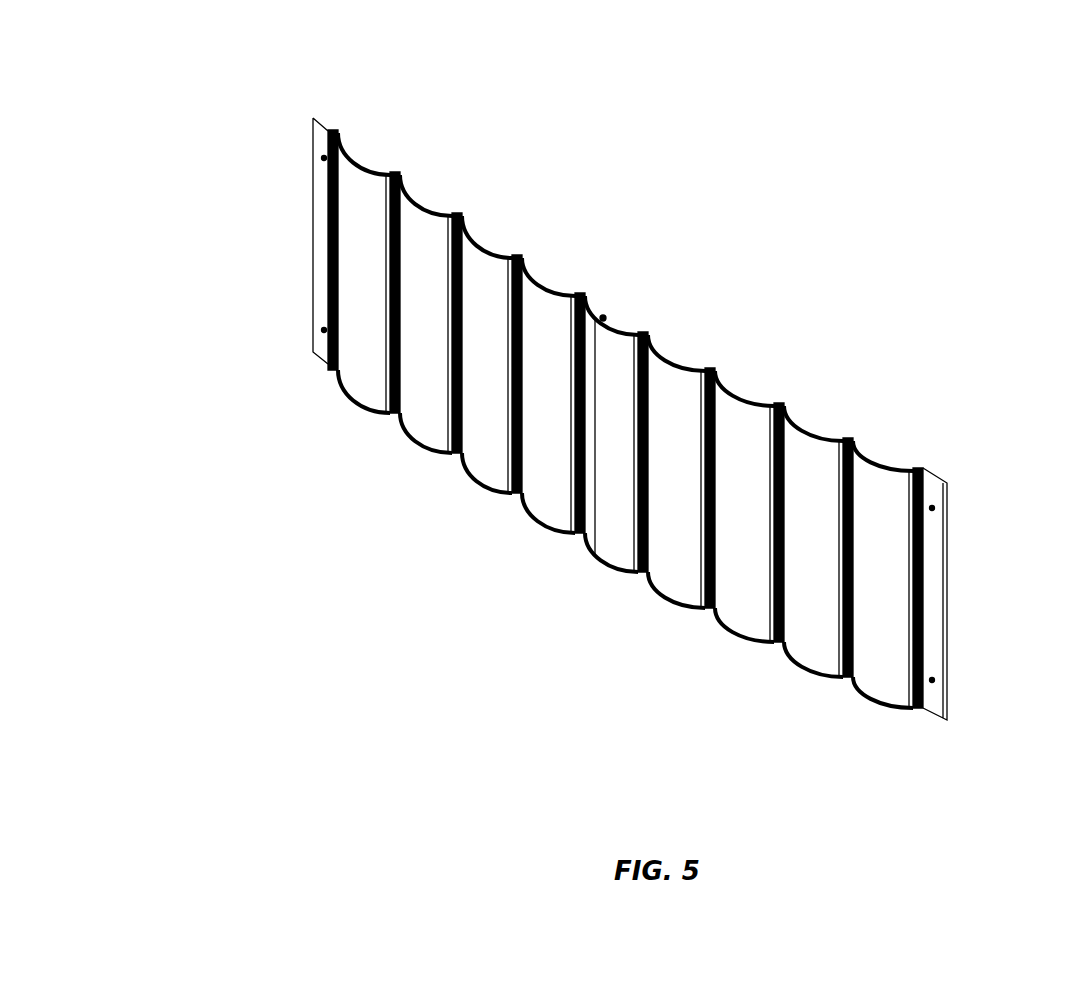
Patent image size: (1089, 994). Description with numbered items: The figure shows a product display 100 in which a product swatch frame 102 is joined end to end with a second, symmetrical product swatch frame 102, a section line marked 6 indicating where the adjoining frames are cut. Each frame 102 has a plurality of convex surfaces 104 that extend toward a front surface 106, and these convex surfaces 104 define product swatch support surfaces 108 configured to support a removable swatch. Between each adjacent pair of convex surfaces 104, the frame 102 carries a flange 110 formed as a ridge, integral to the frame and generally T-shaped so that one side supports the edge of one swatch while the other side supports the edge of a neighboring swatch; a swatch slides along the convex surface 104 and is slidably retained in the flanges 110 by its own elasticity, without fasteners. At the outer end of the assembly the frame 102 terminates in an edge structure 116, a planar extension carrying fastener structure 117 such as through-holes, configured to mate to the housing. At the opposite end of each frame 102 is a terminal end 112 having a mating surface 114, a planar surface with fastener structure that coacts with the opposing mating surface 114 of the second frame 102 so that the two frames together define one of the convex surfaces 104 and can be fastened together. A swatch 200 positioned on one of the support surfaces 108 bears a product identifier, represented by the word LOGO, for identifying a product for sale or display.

The product display 100 is at (463, 34).
The product swatch frame 102 is at (553, 98).
The convex surfaces 104 is at (543, 447).
The front surface 106 is at (342, 252).
The product swatch support surface 108 is at (342, 317).
The flange 110 is at (324, 124).
The terminal end 112 is at (947, 690).
The mating surface 114 is at (935, 507).
The edge structure 116 is at (317, 142).
The fastener structure 117 is at (322, 160).
The swatch 200 is at (405, 414).
The section line for FIG. 6 is at (307, 277).